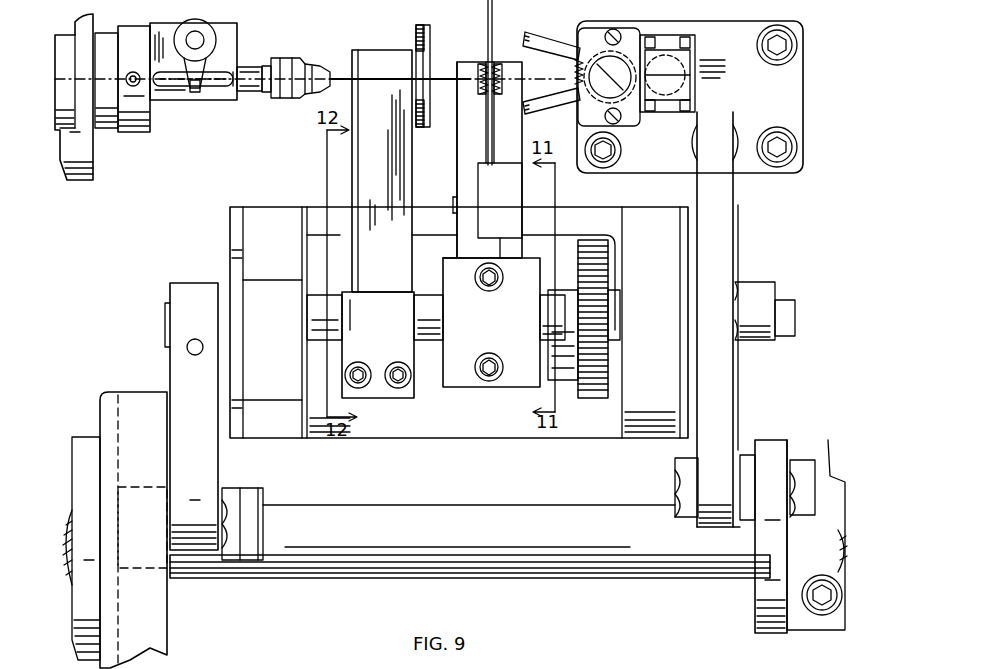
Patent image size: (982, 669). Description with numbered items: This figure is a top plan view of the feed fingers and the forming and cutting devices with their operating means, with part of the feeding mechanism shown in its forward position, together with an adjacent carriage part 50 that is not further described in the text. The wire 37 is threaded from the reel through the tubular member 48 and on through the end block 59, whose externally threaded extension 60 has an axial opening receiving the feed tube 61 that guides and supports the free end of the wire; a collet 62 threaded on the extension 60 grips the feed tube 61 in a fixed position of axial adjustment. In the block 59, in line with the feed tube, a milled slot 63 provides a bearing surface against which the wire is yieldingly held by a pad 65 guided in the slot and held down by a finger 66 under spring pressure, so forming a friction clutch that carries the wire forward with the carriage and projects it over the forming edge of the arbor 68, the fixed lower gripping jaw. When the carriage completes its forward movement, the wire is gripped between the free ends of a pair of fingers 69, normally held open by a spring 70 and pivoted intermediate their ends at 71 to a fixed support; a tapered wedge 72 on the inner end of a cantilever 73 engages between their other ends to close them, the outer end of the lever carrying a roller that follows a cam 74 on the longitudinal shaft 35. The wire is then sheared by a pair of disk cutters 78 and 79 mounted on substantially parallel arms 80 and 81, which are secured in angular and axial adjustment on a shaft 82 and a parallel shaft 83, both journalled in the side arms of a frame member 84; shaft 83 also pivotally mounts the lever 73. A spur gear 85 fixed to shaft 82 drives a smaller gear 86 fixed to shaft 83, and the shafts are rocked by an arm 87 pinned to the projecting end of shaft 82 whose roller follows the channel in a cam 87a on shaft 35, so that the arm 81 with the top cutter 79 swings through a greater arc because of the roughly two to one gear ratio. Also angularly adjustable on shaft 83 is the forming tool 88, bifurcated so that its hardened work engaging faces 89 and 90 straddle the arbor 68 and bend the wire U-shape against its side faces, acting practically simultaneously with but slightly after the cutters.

The longitudinal shaft 35 is at (306, 584).
The wire 37 is at (442, 72).
The tubular member 48 is at (136, 132).
The roller 50 is at (84, 182).
The end block 59 is at (234, 48).
The externally threaded extension 60 is at (252, 93).
The feed tube 61 is at (325, 62).
The collet 62 is at (305, 96).
The milled slot 63 is at (235, 88).
The pad 65 is at (178, 86).
The finger 66 is at (196, 92).
The arbor 68 is at (494, 34).
The fingers 69 is at (548, 36).
The spring 70 is at (580, 38).
The pivot 71 is at (622, 52).
The tapered wedge 72 is at (690, 50).
The cantilever 73 is at (733, 264).
The cam 74 is at (790, 632).
The disk cutter 78 is at (416, 32).
The disk cutter 79 is at (430, 38).
The arm 80 is at (356, 192).
The arm 81 is at (406, 206).
The shaft 82 is at (423, 293).
The shaft 83 is at (436, 340).
The frame member 84 is at (320, 441).
The spur gear 85 is at (592, 398).
The smaller gear 86 is at (602, 318).
The arm 87 is at (215, 480).
The cam 87a is at (167, 636).
The forming tool 88 is at (468, 150).
The work engaging hardened face 89 is at (480, 86).
The work engaging hardened face 90 is at (493, 66).